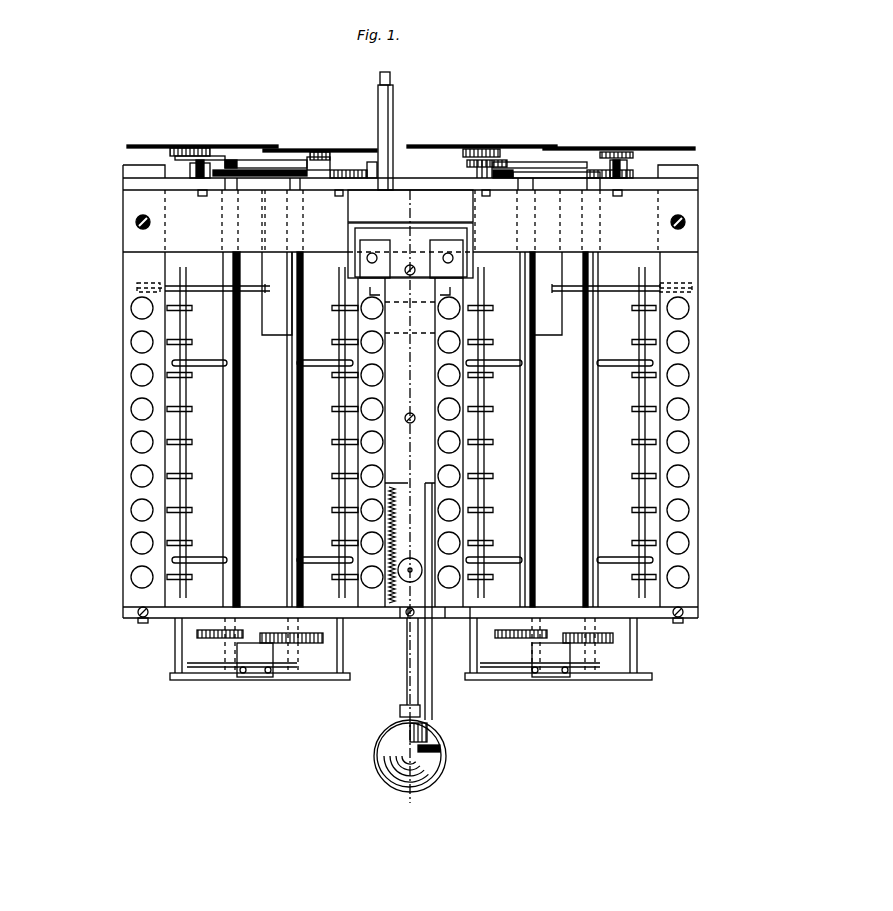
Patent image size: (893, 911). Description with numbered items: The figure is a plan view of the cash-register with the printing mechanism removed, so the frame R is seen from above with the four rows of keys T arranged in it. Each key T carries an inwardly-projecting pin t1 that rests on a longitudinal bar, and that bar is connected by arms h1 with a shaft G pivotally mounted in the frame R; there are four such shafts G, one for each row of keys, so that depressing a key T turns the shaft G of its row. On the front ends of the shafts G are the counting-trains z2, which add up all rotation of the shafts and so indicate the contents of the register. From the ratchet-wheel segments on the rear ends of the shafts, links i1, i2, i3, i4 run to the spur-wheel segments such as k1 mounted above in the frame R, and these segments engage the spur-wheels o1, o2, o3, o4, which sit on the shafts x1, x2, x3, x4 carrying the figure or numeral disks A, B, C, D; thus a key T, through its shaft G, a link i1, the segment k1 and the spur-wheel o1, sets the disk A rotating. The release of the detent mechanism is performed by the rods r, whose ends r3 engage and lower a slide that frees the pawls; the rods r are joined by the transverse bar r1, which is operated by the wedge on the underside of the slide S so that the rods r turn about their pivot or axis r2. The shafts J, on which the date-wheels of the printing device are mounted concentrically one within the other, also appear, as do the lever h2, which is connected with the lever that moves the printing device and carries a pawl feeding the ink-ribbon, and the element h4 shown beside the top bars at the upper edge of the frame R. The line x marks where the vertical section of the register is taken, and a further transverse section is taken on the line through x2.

The frame R is at (409, 389).
The key T is at (380, 470).
The slide S is at (416, 404).
The rod r is at (262, 322).
The transverse bar r1 is at (404, 338).
The pivot or axis r2 is at (247, 288).
The rod ends r3 is at (271, 221).
The shaft G is at (287, 483).
The inwardly-projecting pin t1 is at (192, 308).
The arm h1 is at (195, 362).
The section line x is at (762, 567).
The shaft x1 is at (336, 202).
The shaft x2 is at (198, 188).
The shaft x3 is at (625, 201).
The shaft x4 is at (486, 185).
The shaft J is at (378, 108).
The numeral disk A is at (310, 148).
The numeral disk B is at (233, 145).
The numeral disk C is at (588, 148).
The numeral disk D is at (437, 145).
The lever h2 is at (225, 147).
The gear wheel h4 is at (500, 147).
The link i1 is at (260, 180).
The link i2 is at (266, 156).
The link i3 is at (551, 180).
The link i4 is at (540, 156).
The spur-wheel segment k1 is at (320, 180).
The spur-wheel o1 is at (369, 168).
The spur-wheel o2 is at (190, 168).
The spur-wheel o3 is at (628, 172).
The spur-wheel o4 is at (467, 166).
The counting-train z2 is at (411, 649).